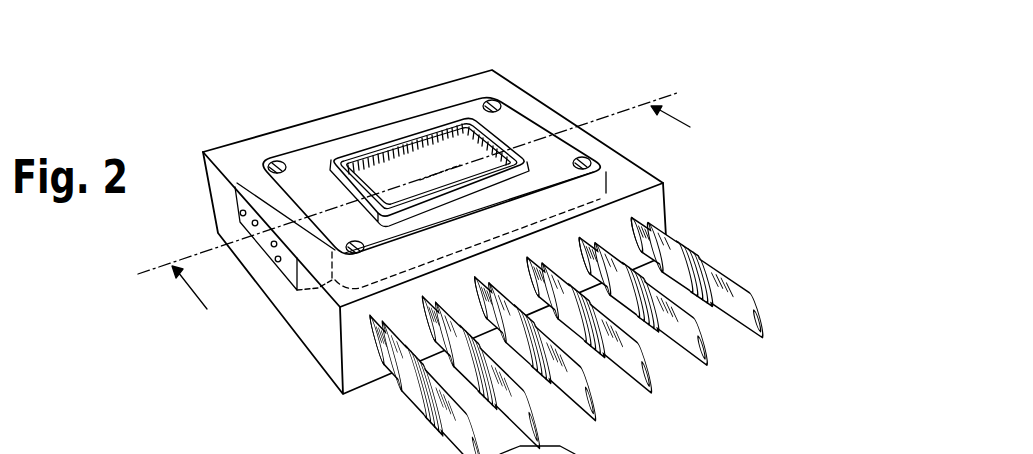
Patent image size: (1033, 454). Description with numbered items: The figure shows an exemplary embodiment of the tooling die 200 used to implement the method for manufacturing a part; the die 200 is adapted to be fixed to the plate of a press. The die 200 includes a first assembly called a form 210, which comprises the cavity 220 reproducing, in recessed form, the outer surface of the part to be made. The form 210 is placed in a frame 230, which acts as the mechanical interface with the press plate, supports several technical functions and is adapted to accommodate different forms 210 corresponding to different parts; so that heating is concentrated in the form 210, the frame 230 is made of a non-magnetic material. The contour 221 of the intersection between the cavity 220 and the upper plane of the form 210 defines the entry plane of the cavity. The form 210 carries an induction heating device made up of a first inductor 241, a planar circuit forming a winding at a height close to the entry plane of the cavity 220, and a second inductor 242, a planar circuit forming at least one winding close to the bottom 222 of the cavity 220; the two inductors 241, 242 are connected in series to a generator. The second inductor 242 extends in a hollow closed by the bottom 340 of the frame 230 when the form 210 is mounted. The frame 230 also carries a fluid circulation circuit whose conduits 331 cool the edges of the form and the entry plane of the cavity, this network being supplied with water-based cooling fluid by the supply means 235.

The die 200 is at (240, 95).
The form 210 is at (512, 128).
The cavity 220 is at (357, 165).
The contour 221 is at (418, 143).
The bottom 222 is at (440, 158).
The frame 230 is at (378, 102).
The supply means 235 is at (665, 228).
The first inductor 241 is at (343, 137).
The second inductor 242 is at (267, 205).
The conduits 331 is at (320, 453).
The bottom of the frame 340 is at (605, 453).